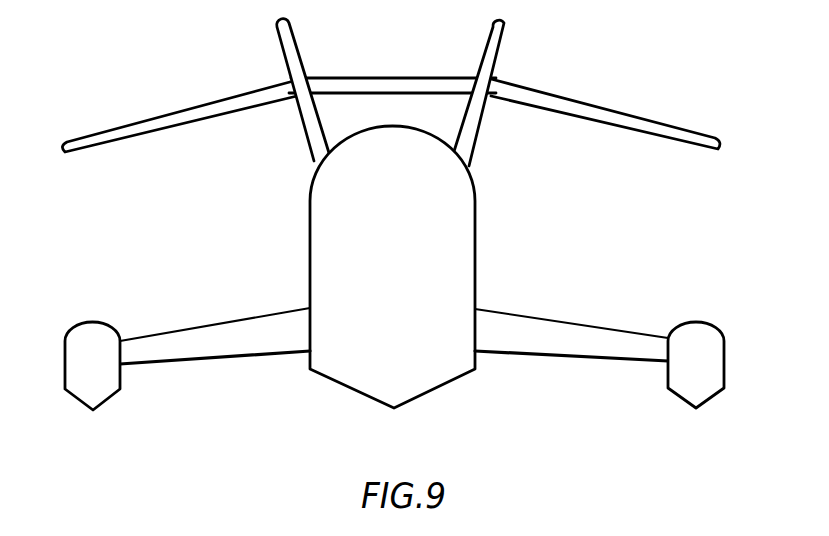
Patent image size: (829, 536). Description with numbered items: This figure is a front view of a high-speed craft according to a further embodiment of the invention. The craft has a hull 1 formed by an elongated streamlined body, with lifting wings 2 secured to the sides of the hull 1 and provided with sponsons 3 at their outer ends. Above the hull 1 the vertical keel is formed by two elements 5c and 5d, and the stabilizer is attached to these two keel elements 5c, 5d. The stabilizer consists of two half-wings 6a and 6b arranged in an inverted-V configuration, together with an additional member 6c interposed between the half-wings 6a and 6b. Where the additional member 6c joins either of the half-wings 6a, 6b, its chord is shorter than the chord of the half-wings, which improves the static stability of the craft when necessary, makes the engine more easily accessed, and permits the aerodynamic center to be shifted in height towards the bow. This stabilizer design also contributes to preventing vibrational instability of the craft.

The hull 1 is at (322, 350).
The lifting wings 2 is at (232, 340).
The sponsons 3 is at (108, 370).
The keel element 5c is at (290, 60).
The keel element 5d is at (483, 67).
The half-wing 6a is at (148, 120).
The half-wing 6b is at (617, 115).
The additional member 6c is at (360, 85).